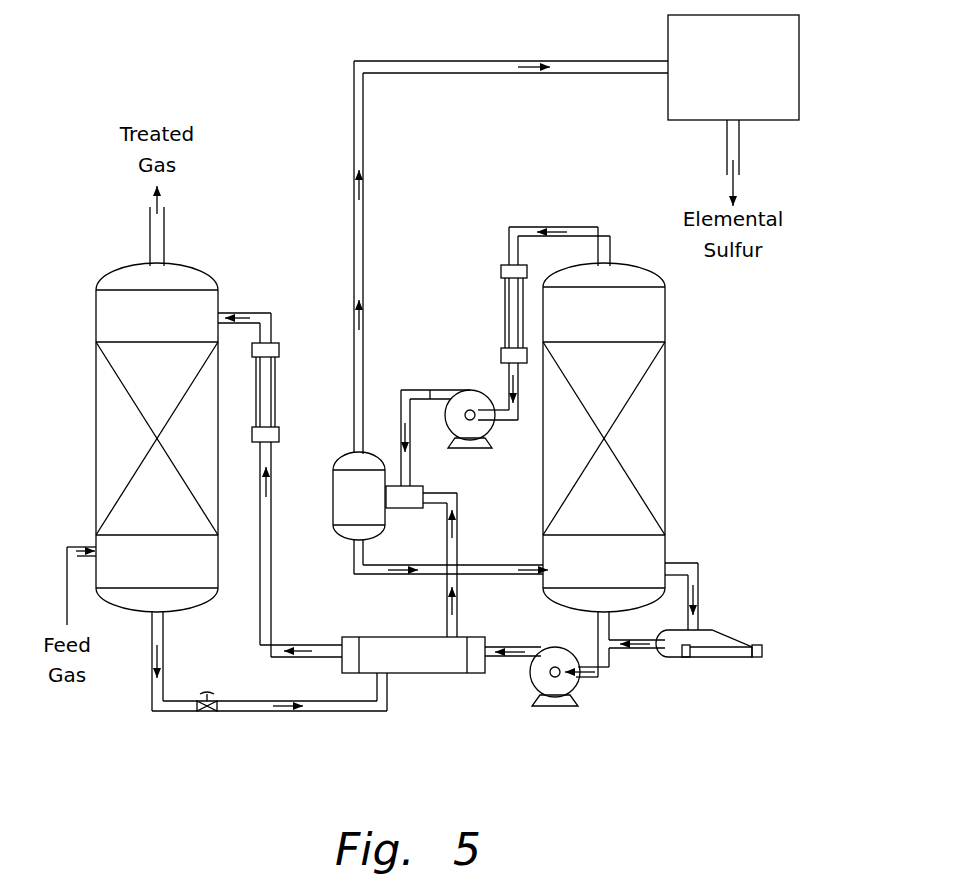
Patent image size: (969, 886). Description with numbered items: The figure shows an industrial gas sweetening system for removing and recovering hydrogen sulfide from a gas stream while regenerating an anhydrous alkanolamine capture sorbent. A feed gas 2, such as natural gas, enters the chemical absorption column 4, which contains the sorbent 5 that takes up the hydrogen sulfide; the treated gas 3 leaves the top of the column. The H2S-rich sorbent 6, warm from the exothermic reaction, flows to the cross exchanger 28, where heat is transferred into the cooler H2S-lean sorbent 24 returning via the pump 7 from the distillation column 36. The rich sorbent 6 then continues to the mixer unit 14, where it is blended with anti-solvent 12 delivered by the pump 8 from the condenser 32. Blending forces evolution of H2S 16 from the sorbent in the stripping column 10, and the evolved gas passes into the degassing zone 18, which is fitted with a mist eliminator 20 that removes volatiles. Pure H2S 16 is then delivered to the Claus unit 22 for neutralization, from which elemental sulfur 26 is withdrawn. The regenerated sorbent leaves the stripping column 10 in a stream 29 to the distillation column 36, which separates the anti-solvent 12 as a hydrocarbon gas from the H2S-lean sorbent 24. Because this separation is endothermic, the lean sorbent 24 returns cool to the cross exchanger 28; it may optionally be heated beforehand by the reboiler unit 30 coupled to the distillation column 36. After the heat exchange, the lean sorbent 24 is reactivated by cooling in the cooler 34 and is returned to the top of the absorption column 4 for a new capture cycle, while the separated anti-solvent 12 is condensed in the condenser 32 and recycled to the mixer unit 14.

The feed gas 2 is at (74, 543).
The treated gas outlet 3 is at (160, 200).
The absorption column 4 is at (147, 380).
The sorbent 5 is at (148, 576).
The H2S-rich sorbent 6 is at (167, 660).
The pump 7 is at (536, 678).
The pump 8 is at (472, 390).
The stripping column 10 is at (351, 441).
The anti-solvent 12 is at (553, 232).
The mixer unit 14 is at (402, 502).
The H2S 16 is at (532, 76).
The degassing zone 18 is at (344, 511).
The mist eliminator 20 is at (338, 481).
The Claus unit 22 is at (718, 108).
The H2S-lean sorbent 24 is at (226, 314).
The elemental sulfur outlet 26 is at (740, 178).
The cross exchanger 28 is at (398, 668).
The stream 29 is at (402, 576).
The reboiler unit 30 is at (710, 628).
The condenser 32 is at (503, 302).
The cooler 34 is at (278, 385).
The distillation column 36 is at (646, 240).